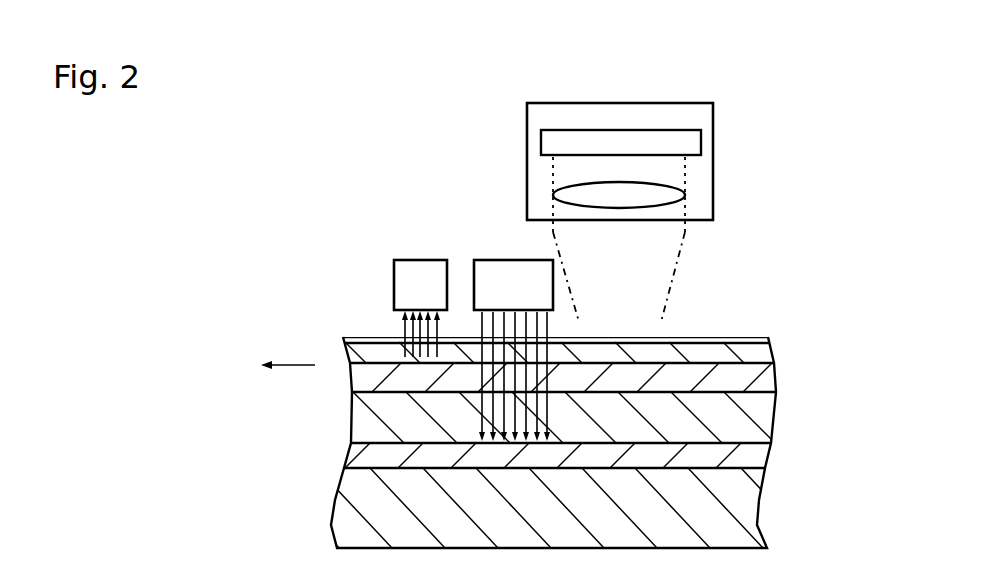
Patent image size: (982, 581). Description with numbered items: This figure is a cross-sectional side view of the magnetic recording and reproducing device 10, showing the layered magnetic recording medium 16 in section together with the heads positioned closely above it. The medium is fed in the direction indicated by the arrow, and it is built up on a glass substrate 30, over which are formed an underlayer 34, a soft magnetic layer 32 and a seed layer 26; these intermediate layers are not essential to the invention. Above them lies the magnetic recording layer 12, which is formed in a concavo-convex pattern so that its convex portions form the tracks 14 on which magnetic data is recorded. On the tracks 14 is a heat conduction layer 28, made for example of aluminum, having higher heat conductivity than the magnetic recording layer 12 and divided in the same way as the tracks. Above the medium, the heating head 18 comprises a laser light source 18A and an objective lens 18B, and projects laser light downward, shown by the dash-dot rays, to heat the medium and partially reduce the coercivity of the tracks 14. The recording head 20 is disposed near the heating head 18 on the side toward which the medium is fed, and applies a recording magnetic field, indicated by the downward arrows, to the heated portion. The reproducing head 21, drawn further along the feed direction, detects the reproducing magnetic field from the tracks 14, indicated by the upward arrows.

The magnetic recording and reproducing device 10 is at (638, 71).
The heating head 18 is at (527, 128).
The laser light source 18A is at (701, 141).
The objective lens 18B is at (686, 194).
The recording head 20 is at (481, 258).
The reproducing head 21 is at (419, 258).
The magnetic recording medium 16 is at (354, 319).
The tracks 14 is at (712, 350).
The heat conduction layer 28 is at (768, 338).
The magnetic recording layer 12 is at (772, 353).
The seed layer 26 is at (776, 381).
The soft magnetic layer 32 is at (777, 421).
The underlayer 34 is at (767, 459).
The glass substrate 30 is at (758, 511).